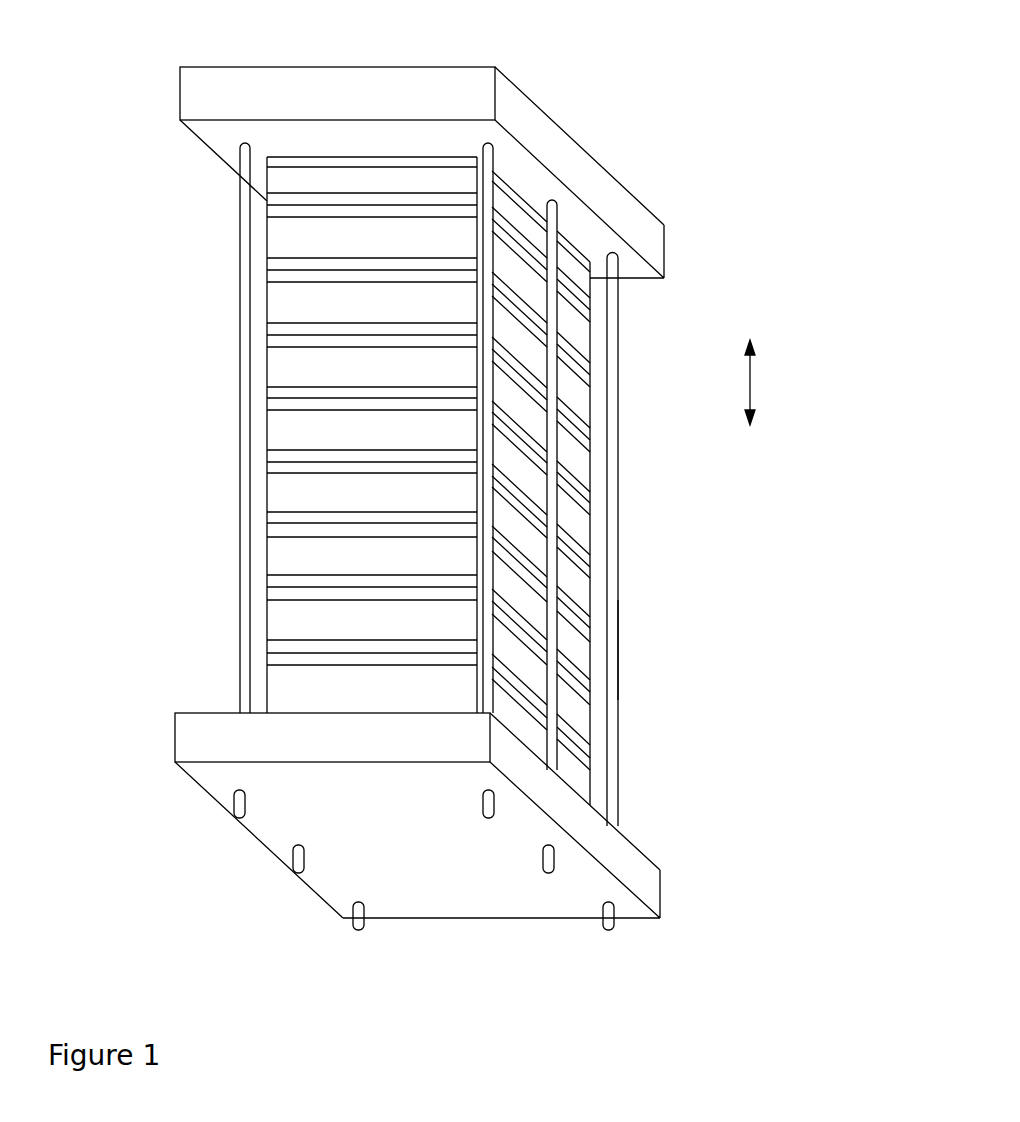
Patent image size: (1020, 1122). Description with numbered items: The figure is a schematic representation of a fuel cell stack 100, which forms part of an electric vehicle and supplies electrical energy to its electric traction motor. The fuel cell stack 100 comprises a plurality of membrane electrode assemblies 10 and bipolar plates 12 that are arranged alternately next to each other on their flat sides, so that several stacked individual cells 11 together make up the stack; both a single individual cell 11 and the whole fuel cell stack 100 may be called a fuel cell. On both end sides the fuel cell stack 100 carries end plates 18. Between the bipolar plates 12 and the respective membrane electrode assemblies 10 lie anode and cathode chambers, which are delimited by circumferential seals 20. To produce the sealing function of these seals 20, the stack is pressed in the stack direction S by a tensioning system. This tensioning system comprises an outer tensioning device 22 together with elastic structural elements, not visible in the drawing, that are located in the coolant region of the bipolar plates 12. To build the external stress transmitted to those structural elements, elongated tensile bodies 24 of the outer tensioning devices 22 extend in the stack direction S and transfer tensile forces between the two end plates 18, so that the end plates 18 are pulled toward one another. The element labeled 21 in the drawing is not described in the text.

The fuel cell stack 100 is at (488, 465).
The end plate 18 is at (597, 185).
The tie rod 21 is at (583, 240).
The bipolar plate 12 is at (593, 290).
The stack direction S is at (753, 380).
The individual cell 11 is at (257, 398).
The circumferential seal 20 is at (580, 482).
The membrane electrode assembly 10 is at (590, 493).
The outer tensioning device 22 is at (620, 633).
The tensile body 24 is at (620, 663).